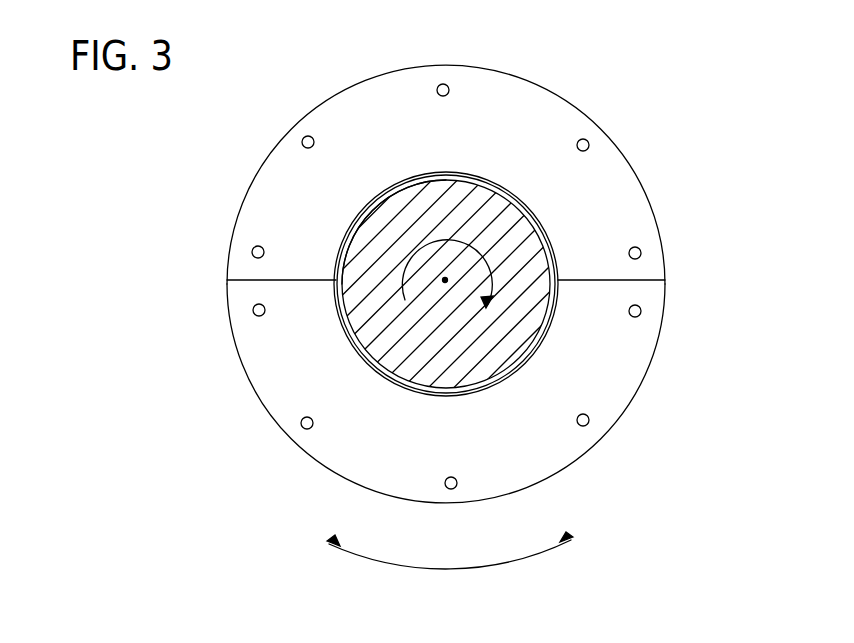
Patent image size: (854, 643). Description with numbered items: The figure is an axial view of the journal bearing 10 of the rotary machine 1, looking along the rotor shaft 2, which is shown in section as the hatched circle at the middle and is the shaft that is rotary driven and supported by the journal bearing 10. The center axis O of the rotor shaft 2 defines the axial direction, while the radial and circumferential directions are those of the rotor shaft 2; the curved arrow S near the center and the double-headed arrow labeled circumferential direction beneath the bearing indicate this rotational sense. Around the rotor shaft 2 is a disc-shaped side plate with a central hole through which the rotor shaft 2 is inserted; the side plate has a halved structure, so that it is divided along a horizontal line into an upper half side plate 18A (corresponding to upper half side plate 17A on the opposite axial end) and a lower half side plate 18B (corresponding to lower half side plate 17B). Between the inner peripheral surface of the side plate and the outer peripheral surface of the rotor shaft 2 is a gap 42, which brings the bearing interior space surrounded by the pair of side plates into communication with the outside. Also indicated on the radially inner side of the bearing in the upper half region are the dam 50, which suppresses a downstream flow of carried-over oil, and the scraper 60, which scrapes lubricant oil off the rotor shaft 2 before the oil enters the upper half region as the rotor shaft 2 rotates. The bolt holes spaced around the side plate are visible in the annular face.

The rotary machine 1 is at (776, 45).
The rotor shaft 2 is at (445, 195).
The journal bearing 10 is at (400, 284).
The upper half side plate 17A is at (265, 207).
The lower half side plate 17B is at (280, 398).
The upper half side plate 18A is at (382, 174).
The lower half side plate 18B is at (425, 393).
The gap 42 is at (385, 197).
The dam 50 is at (550, 232).
The scraper 60 is at (338, 277).
The center axis O is at (433, 292).
The rotation direction S is at (447, 266).